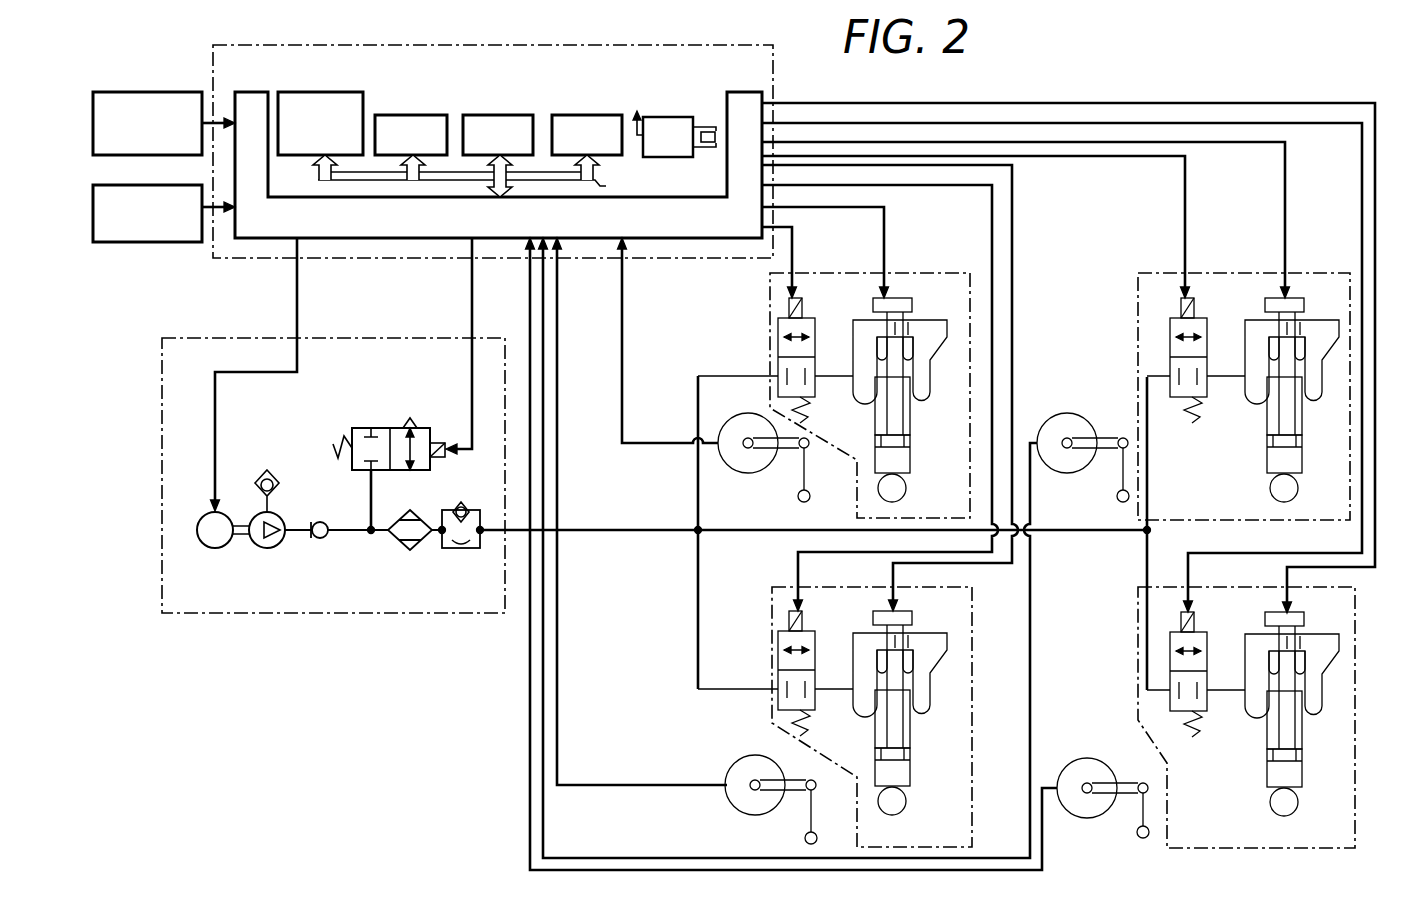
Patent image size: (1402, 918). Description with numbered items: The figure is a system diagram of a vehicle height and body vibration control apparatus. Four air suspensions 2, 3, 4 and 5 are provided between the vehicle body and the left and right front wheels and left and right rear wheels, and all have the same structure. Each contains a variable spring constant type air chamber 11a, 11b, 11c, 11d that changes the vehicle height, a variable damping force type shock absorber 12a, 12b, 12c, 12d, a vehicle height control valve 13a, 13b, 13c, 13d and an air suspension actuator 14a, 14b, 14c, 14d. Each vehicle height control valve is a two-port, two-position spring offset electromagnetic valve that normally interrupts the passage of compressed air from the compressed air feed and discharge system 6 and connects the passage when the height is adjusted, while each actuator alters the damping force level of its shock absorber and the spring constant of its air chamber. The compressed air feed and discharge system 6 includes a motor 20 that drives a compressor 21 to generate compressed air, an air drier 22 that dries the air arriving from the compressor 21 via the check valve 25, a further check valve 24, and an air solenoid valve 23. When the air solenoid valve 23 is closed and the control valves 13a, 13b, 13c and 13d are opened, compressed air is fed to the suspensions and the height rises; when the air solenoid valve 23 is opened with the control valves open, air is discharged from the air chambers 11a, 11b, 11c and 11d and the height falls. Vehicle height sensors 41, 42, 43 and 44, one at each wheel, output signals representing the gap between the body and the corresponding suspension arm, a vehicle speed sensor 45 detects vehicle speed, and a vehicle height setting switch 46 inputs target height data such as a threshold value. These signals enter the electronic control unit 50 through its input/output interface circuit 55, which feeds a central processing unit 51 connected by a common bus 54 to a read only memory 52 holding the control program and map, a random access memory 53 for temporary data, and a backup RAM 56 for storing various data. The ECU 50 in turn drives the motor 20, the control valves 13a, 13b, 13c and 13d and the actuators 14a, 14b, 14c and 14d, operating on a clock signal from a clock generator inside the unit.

The air suspension 2 is at (936, 270).
The air suspension 3 is at (973, 640).
The air suspension 4 is at (1155, 272).
The air suspension 5 is at (1138, 635).
The compressed air feed and discharge system 6 is at (243, 338).
The air chamber 11a is at (918, 400).
The air chamber 11b is at (911, 694).
The air chamber 11c is at (1298, 380).
The air chamber 11d is at (1300, 694).
The shock absorber 12a is at (912, 458).
The shock absorber 12b is at (920, 752).
The shock absorber 12c is at (1311, 439).
The shock absorber 12d is at (1311, 753).
The vehicle height control valve 13a is at (804, 311).
The vehicle height control valve 13b is at (815, 666).
The vehicle height control valve 13c is at (1193, 352).
The vehicle height control valve 13d is at (1211, 665).
The air suspension actuator 14a is at (912, 305).
The air suspension actuator 14b is at (918, 611).
The air suspension actuator 14c is at (1306, 295).
The air suspension actuator 14d is at (1308, 608).
The motor 20 is at (213, 548).
The compressor 21 is at (267, 548).
The air drier 22 is at (397, 546).
The air solenoid valve 23 is at (378, 428).
The check valve 24 is at (461, 550).
The check valve 25 is at (322, 540).
The vehicle height sensor 41 is at (738, 418).
The vehicle height sensor 42 is at (748, 752).
The vehicle height sensor 43 is at (1090, 422).
The vehicle height sensor 44 is at (1090, 760).
The vehicle speed sensor 45 is at (137, 92).
The vehicle height setting switch 46 is at (138, 242).
The electronic control unit 50 is at (258, 258).
The central processing unit 51 is at (583, 115).
The read only memory 52 is at (500, 115).
The random access memory 53 is at (408, 115).
The common bus 54 is at (475, 176).
The input/output interface circuit 55 is at (652, 197).
The backup RAM 56 is at (300, 157).